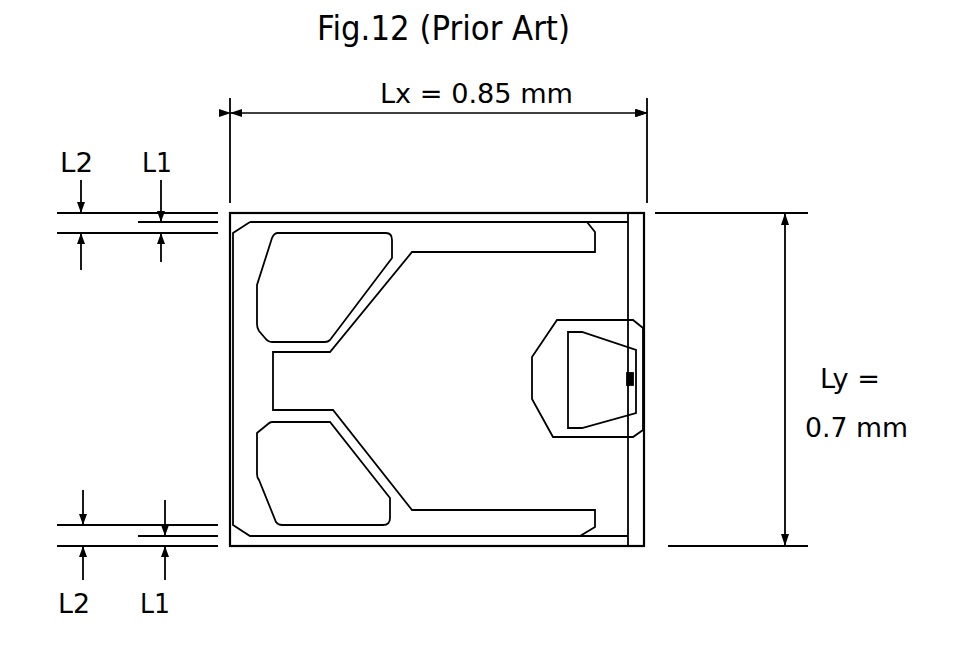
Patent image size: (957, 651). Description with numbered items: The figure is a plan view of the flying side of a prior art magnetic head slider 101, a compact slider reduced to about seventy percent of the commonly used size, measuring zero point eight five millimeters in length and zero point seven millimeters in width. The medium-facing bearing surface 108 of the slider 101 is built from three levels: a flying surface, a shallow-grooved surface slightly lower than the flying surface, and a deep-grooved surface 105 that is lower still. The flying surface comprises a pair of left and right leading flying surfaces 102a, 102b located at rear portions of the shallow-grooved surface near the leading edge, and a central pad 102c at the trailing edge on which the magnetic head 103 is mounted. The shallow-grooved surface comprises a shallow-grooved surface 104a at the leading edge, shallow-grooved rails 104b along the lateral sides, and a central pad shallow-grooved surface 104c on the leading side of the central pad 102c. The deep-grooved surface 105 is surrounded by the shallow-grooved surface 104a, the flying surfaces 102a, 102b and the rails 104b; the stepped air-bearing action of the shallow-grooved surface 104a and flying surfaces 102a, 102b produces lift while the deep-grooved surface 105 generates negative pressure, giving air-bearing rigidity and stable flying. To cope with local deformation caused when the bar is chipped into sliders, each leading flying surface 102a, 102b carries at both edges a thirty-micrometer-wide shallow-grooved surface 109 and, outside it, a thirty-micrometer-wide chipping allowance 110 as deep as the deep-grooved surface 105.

The slider 101 is at (227, 385).
The leading flying surface 102a is at (275, 303).
The leading flying surface 102b is at (273, 463).
The central pad 102c is at (587, 350).
The magnetic head 103 is at (635, 385).
The shallow-grooved surface 104a is at (240, 418).
The shallow-grooved rails 104b is at (470, 235).
The central pad shallow-grooved surface 104c is at (550, 395).
The deep-grooved surface 105 is at (482, 350).
The bearing surface 108 is at (332, 520).
The shallow-grooved surface 109 is at (298, 237).
The chipping allowance 110 is at (367, 225).